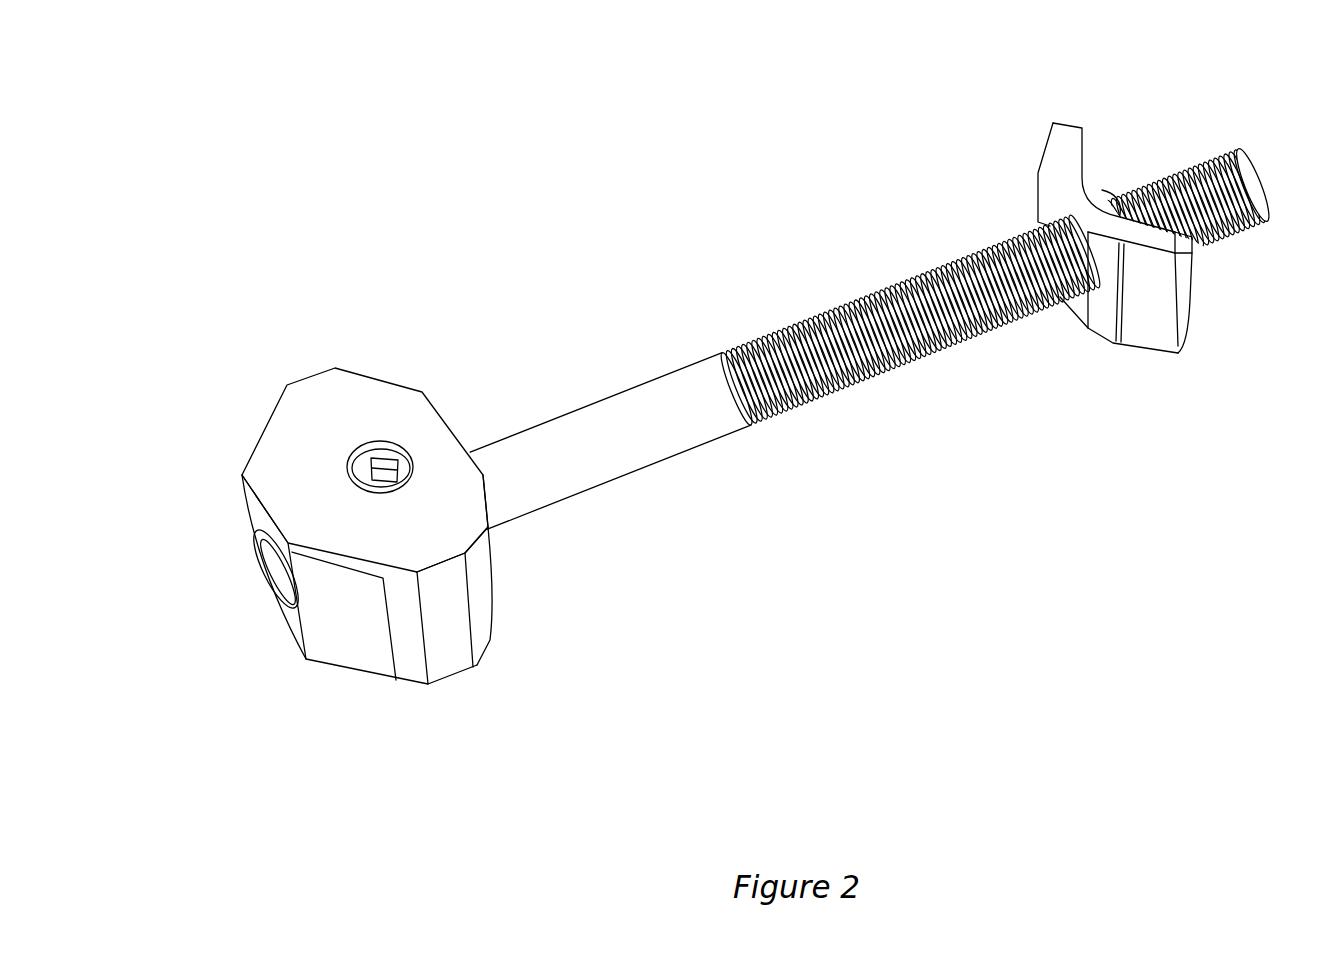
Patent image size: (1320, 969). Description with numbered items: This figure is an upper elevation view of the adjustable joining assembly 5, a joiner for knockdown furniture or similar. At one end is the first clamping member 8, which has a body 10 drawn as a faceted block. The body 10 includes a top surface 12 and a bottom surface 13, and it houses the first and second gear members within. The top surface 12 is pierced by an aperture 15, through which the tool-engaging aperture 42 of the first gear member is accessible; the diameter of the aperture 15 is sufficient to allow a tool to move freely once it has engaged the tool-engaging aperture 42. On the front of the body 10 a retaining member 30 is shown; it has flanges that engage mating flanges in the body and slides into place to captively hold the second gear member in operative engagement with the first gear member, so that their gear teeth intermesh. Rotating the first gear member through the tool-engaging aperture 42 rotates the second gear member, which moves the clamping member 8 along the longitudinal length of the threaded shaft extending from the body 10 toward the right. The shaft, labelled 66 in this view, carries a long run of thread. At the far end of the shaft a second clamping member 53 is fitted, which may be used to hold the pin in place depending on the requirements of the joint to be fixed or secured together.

The adjustable joining assembly 5 is at (818, 178).
The first clamping member 8 is at (423, 322).
The body 10 is at (265, 470).
The top surface 12 is at (457, 525).
The bottom surface 13 is at (452, 652).
The aperture 15 is at (408, 464).
The retaining member 30 is at (343, 652).
The tool-engaging aperture 42 is at (342, 470).
The second clamping member 53 is at (1157, 313).
The threaded shaft 66 is at (807, 400).